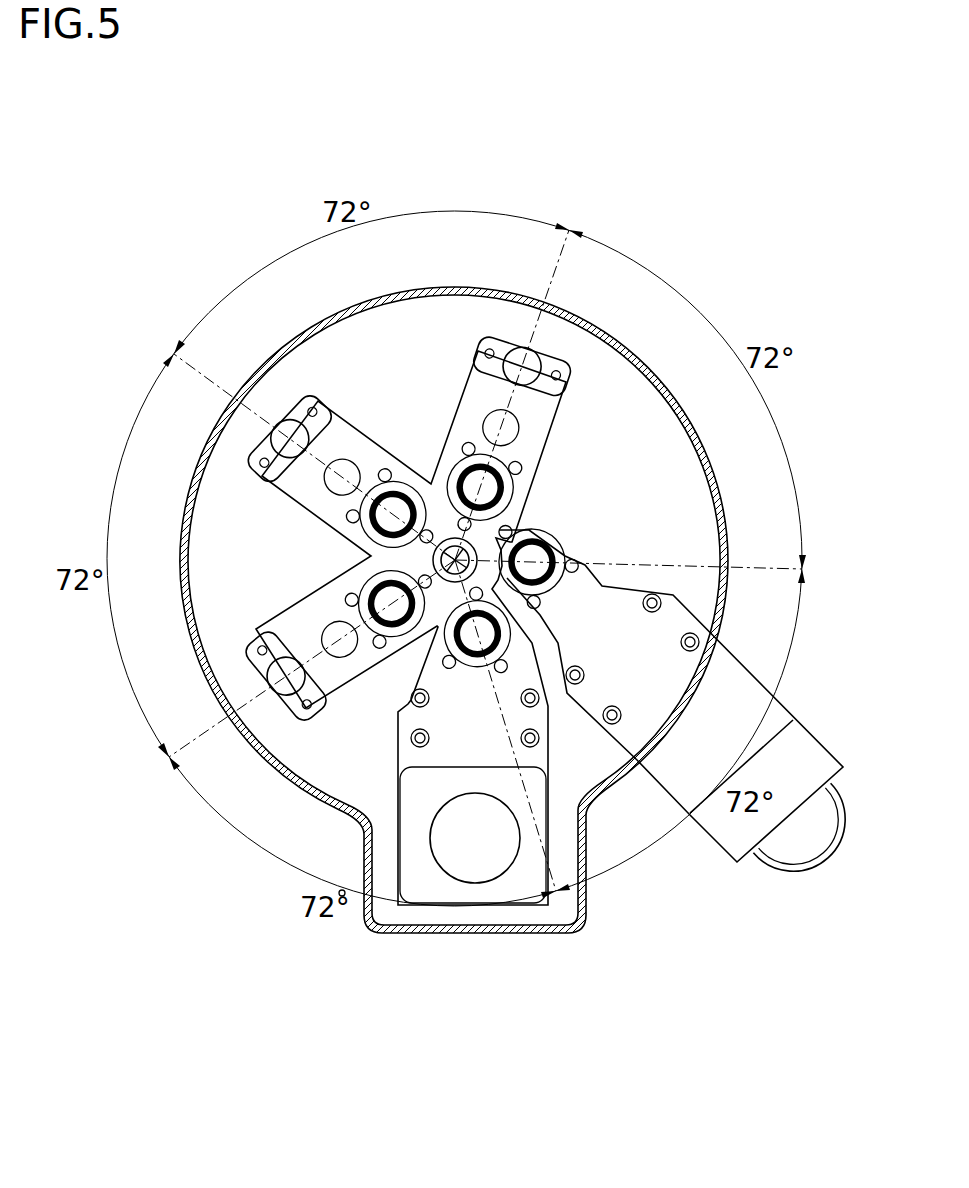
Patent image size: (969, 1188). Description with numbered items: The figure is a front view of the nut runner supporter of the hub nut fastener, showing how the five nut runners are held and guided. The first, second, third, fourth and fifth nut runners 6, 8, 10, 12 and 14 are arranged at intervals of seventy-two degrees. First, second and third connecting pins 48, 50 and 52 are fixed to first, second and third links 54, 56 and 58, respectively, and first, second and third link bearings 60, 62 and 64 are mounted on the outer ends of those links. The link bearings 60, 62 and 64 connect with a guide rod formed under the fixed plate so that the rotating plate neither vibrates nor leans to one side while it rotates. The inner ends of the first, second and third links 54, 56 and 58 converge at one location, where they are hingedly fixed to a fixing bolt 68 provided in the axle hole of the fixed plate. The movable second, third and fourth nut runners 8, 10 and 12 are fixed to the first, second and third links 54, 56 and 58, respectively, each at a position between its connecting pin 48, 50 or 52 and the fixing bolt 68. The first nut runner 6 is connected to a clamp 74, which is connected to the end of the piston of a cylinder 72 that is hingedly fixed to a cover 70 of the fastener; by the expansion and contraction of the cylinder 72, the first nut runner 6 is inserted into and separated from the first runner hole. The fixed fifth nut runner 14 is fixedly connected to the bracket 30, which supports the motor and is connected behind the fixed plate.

The first nut runner 6 is at (554, 556).
The second nut runner 8 is at (502, 488).
The third nut runner 10 is at (362, 492).
The fourth nut runner 12 is at (394, 619).
The fifth nut runner 14 is at (502, 676).
The bracket 30 is at (512, 887).
The first connecting pin 48 is at (520, 430).
The second connecting pin 50 is at (318, 490).
The third connecting pin 52 is at (330, 652).
The first link 54 is at (547, 403).
The second link 56 is at (292, 398).
The third link 58 is at (290, 630).
The first link bearing 60 is at (521, 351).
The second link bearing 62 is at (270, 441).
The third link bearing 64 is at (270, 675).
The fixing bolt 68 is at (447, 665).
The cover 70 is at (607, 333).
The cylinder 72 is at (822, 806).
The clamp 74 is at (740, 685).